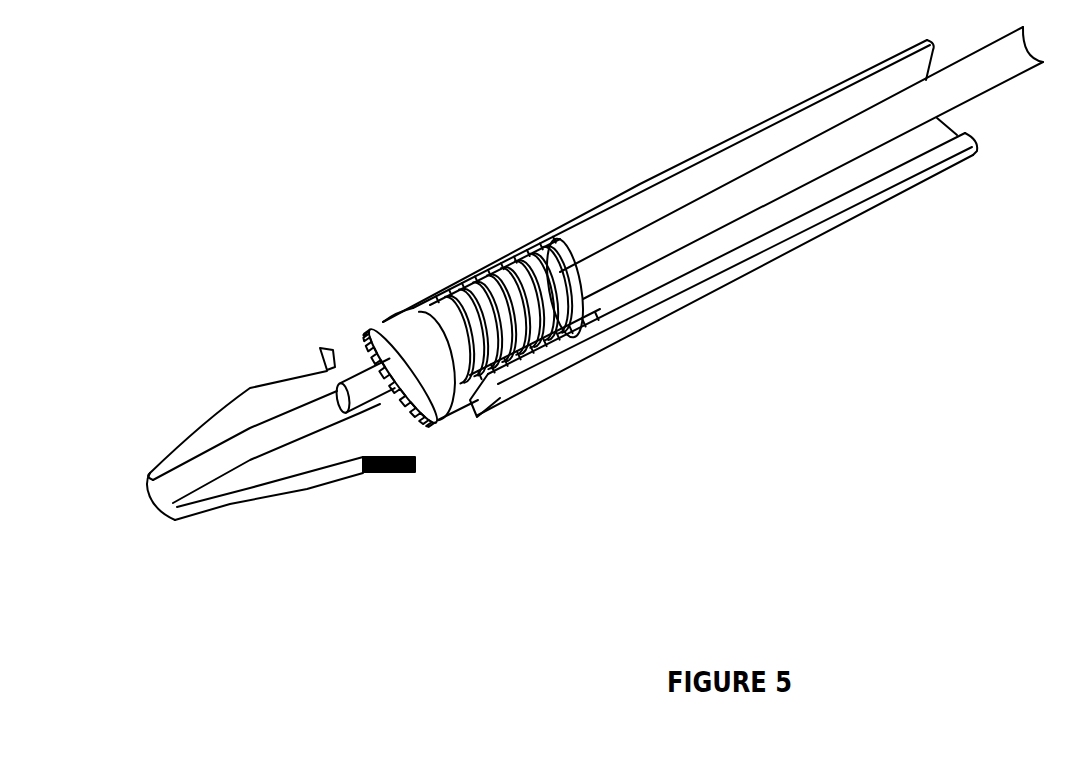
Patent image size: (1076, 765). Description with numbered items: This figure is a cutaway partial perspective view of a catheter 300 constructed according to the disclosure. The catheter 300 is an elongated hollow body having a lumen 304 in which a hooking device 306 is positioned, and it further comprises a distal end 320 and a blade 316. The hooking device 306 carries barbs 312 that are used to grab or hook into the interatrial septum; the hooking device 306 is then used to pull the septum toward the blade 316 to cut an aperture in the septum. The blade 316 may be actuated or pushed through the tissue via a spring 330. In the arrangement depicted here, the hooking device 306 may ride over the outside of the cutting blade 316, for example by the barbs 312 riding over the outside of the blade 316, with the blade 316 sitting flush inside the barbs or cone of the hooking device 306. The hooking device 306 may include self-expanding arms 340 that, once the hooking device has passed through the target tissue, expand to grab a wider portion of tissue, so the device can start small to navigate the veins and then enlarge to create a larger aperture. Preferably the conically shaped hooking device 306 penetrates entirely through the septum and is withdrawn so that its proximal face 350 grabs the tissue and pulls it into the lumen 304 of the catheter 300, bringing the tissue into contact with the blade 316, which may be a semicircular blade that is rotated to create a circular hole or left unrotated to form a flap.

The catheter 300 is at (800, 290).
The lumen 304 is at (671, 225).
The hooking device 306 is at (248, 480).
The barbs 312 is at (320, 348).
The blade 316 is at (378, 327).
The distal end 320 is at (500, 427).
The spring 330 is at (547, 283).
The self-expanding arms 340 is at (410, 478).
The proximal face 350 is at (327, 367).